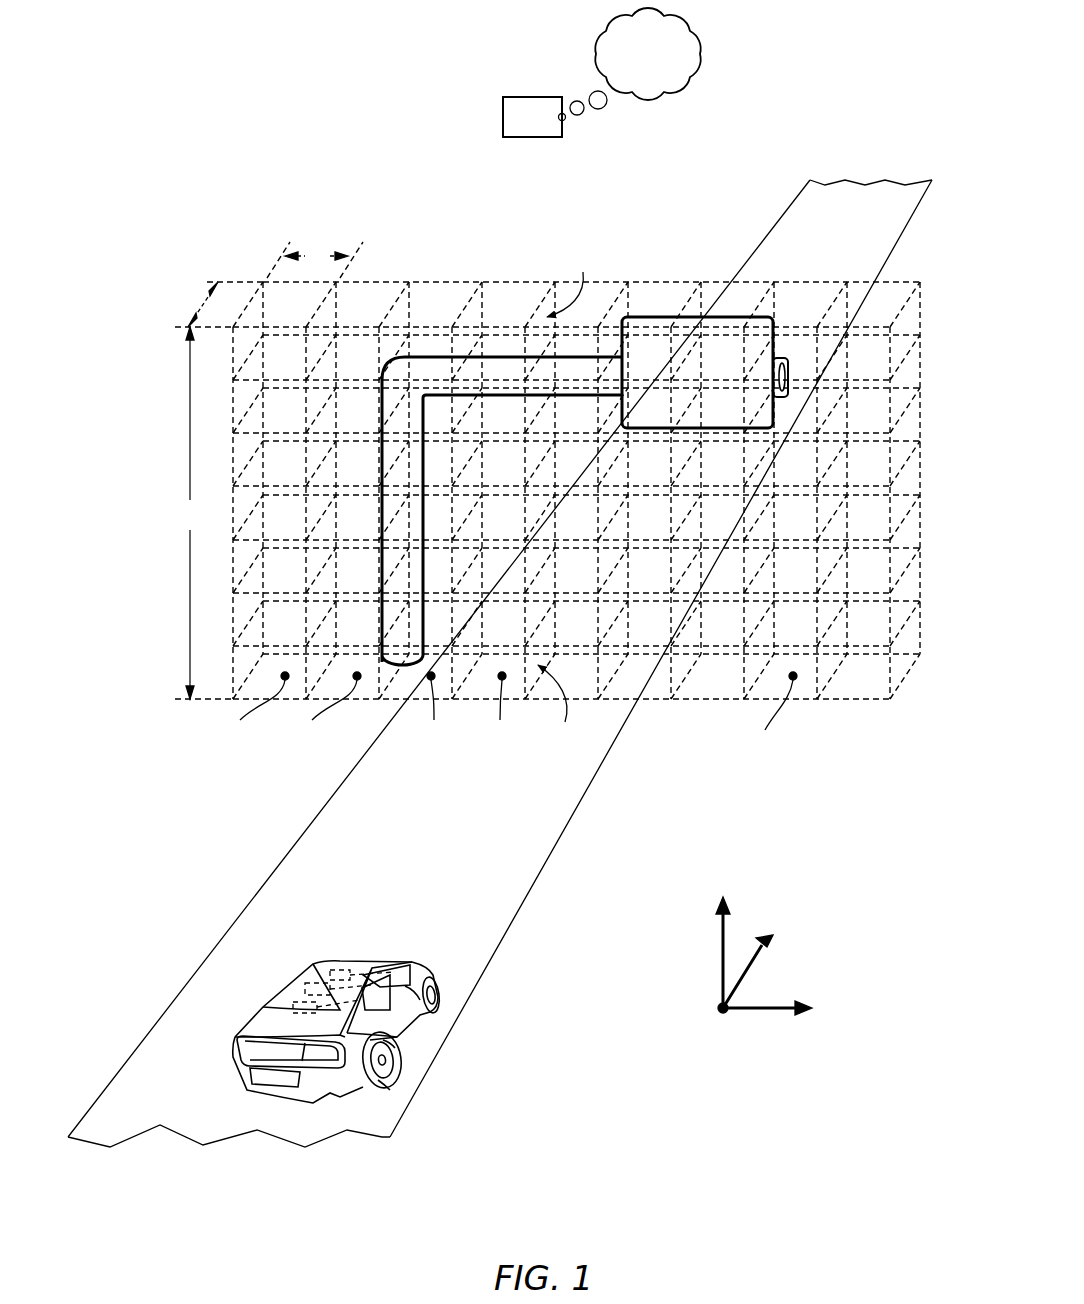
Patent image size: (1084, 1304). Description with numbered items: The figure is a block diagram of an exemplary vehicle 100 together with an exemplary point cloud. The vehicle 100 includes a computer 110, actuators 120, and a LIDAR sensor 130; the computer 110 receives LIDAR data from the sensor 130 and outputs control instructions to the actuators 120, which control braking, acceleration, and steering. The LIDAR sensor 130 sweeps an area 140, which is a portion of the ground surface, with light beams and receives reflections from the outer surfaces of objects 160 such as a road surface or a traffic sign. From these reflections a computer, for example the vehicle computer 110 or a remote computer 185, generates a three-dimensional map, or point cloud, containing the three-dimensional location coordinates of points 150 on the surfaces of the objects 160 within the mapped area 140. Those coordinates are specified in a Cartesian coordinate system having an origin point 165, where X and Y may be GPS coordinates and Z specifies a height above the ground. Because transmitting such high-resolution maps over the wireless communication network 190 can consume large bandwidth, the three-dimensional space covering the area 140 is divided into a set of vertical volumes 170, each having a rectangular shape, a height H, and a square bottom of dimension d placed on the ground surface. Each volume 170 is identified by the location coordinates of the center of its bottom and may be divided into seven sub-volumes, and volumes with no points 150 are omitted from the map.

The vehicle 100 is at (320, 962).
The computer 110 is at (405, 986).
The actuators 120 is at (383, 1040).
The LIDAR sensor 130 is at (378, 1080).
The area 140 is at (296, 176).
The point 150 is at (697, 333).
The object 160 is at (437, 356).
The origin point 165 is at (723, 1012).
The volume 170 is at (616, 758).
The remote computer 185 is at (532, 117).
The wireless communication network 190 is at (630, 64).